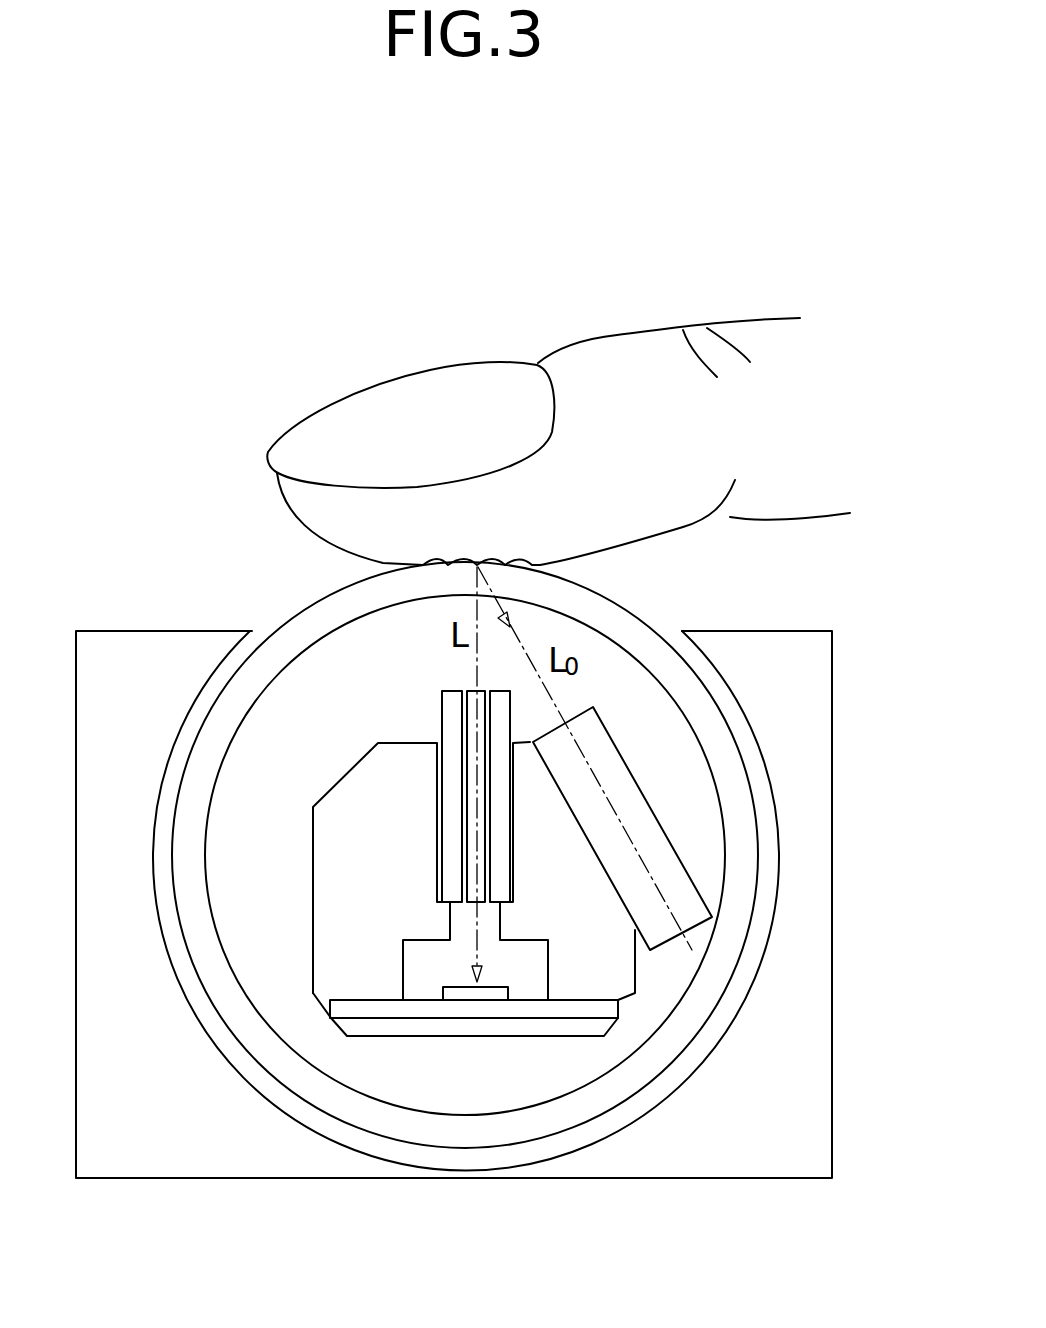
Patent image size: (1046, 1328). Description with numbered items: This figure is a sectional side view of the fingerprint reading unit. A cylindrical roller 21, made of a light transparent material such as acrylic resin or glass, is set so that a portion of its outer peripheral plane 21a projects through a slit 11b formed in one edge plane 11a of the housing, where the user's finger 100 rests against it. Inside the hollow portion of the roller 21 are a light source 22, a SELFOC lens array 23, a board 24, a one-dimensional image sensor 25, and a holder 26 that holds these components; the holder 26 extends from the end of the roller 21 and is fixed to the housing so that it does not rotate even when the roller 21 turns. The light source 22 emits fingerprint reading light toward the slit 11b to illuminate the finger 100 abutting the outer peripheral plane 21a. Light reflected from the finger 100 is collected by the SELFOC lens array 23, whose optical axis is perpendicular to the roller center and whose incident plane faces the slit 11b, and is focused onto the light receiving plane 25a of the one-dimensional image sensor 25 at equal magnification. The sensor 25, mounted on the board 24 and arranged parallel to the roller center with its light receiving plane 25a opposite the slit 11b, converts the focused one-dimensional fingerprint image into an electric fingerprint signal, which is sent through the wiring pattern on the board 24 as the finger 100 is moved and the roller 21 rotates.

The finger 100 is at (603, 333).
The edge plane of the housing 11a is at (807, 630).
The slit 11b is at (682, 634).
The roller 21 is at (647, 620).
The outer peripheral plane 21a is at (603, 598).
The light source 22 is at (657, 840).
The SELFOC lens array 23 is at (443, 691).
The board 24 is at (373, 1040).
The one-dimensional image sensor 25 is at (478, 1000).
The light receiving plane 25a is at (482, 993).
The holder 26 is at (617, 980).